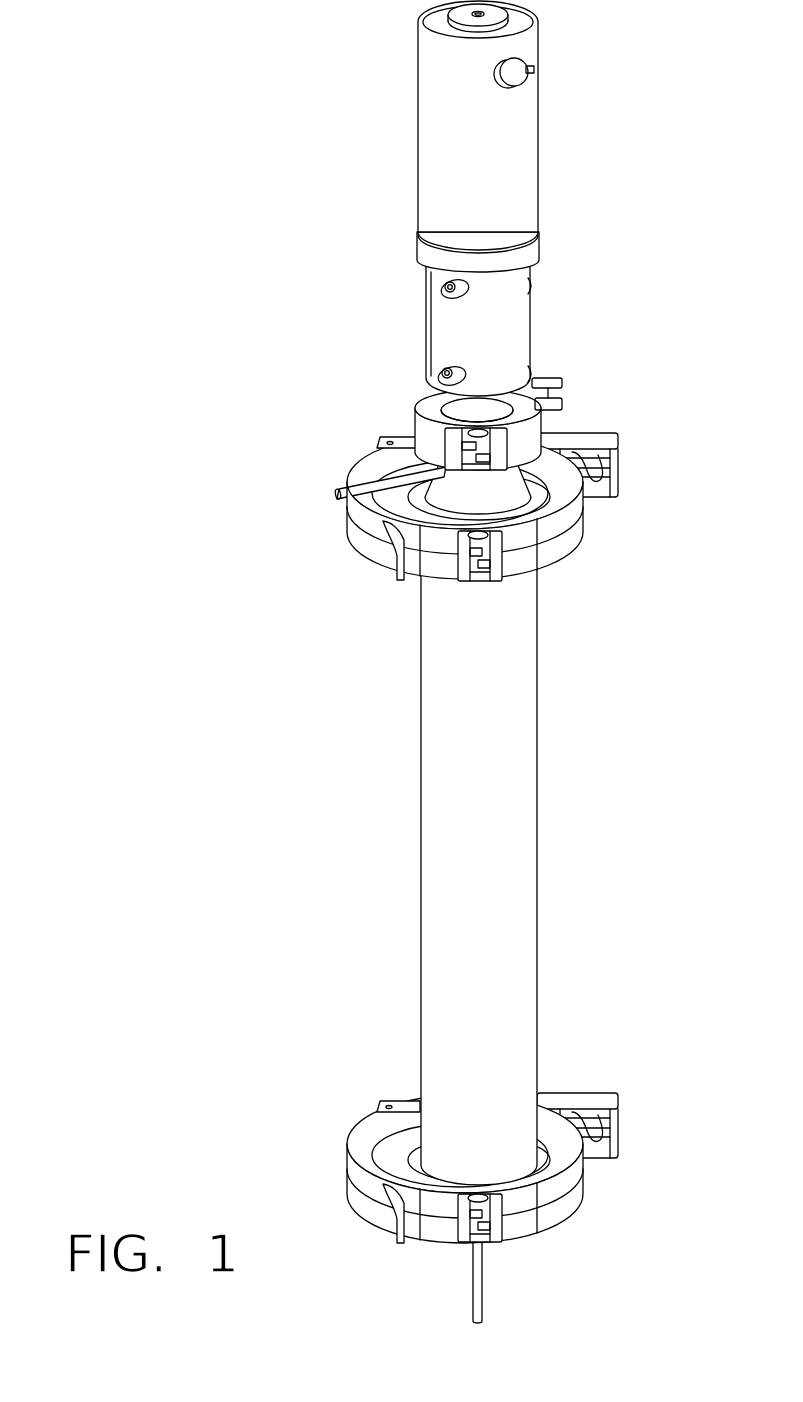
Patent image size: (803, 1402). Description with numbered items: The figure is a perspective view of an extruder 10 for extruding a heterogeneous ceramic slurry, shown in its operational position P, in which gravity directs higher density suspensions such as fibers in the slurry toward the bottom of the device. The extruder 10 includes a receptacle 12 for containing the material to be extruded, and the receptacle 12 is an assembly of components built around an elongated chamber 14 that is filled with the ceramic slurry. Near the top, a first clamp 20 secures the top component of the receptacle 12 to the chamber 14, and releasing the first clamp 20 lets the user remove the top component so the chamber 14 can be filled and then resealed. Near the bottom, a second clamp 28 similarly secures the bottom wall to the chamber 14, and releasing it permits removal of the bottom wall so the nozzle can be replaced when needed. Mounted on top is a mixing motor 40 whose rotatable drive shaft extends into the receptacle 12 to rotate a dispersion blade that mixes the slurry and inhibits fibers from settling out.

The extruder 10 is at (252, 132).
The mixing motor 40 is at (495, 150).
The operational position P is at (560, 322).
The first clamp 20 is at (585, 550).
The receptacle 12 is at (452, 911).
The chamber 14 is at (437, 885).
The second clamp 28 is at (362, 1140).